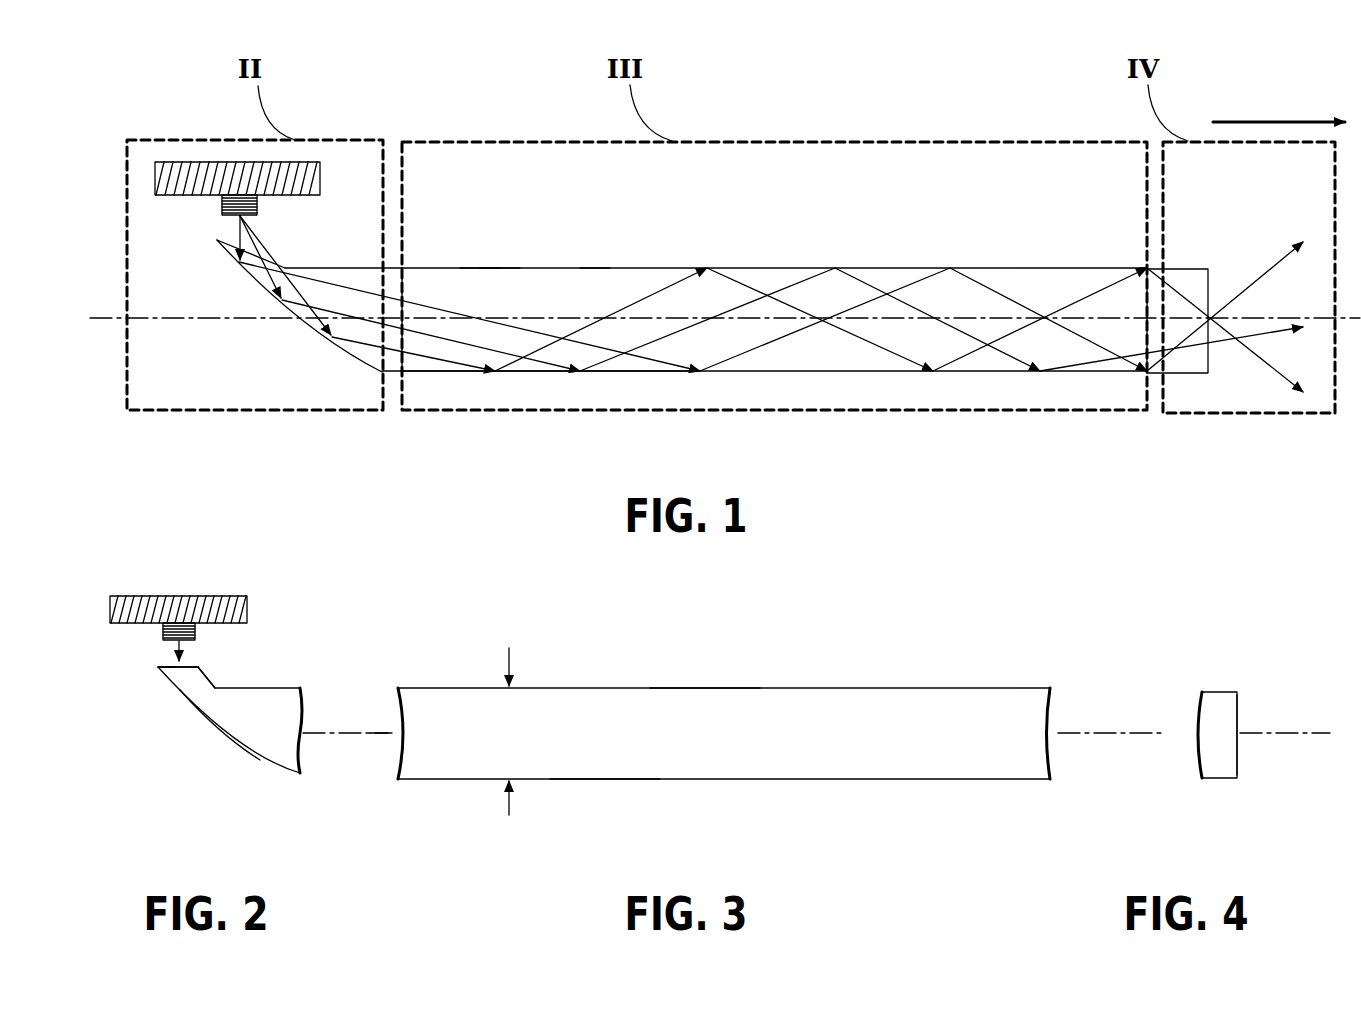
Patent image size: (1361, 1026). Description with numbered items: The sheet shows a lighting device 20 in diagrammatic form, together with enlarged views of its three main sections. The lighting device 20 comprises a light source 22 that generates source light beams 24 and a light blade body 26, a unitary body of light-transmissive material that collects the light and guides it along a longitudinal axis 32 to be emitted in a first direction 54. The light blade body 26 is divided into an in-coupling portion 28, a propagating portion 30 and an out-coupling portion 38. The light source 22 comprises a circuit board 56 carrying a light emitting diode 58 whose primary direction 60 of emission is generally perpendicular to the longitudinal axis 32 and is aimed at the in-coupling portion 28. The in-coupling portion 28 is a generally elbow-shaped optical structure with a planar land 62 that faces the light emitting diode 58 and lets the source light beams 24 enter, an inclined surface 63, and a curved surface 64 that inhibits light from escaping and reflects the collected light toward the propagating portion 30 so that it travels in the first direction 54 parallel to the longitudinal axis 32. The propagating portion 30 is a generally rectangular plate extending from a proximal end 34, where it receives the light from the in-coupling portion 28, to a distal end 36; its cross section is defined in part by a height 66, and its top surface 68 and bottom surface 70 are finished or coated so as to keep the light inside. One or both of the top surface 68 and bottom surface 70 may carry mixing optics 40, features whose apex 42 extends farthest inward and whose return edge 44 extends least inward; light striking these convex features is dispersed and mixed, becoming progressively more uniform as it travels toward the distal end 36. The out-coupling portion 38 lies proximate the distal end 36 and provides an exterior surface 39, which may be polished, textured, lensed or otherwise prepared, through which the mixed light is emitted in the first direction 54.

In FIG. 1, the lighting device 20 is at (735, 93).
In FIG. 1, the light source 22 is at (183, 150).
In FIG. 1, the source light beams 24 is at (238, 223).
In FIG. 1, the light blade body 26 is at (557, 380).
In FIG. 1, the in-coupling portion 28 is at (297, 340).
In FIG. 2, the in-coupling portion 28 is at (233, 740).
In FIG. 1, the propagating portion 30 is at (920, 378).
In FIG. 3, the propagating portion 30 is at (563, 680).
In FIG. 1, the longitudinal axis 32 is at (163, 325).
In FIG. 2, the longitudinal axis 32 is at (358, 733).
In FIG. 3, the longitudinal axis 32 is at (1102, 733).
In FIG. 4, the longitudinal axis 32 is at (1293, 735).
In FIG. 1, the proximal end 34 is at (413, 262).
In FIG. 3, the proximal end 34 is at (414, 680).
In FIG. 1, the distal end 36 is at (1133, 258).
In FIG. 3, the distal end 36 is at (1042, 680).
In FIG. 1, the out-coupling portion 38 is at (1195, 382).
In FIG. 4, the out-coupling portion 38 is at (1218, 682).
In FIG. 4, the exterior surface 39 is at (1237, 705).
In FIG. 1, the mixing optics 40 is at (470, 262).
In FIG. 1, the apex 42 is at (515, 271).
In FIG. 1, the return edge 44 is at (598, 271).
In FIG. 1, the first direction 54 is at (1297, 120).
In FIG. 2, the circuit board 56 is at (220, 595).
In FIG. 2, the light emitting diode 58 is at (193, 637).
In FIG. 2, the primary direction of light emission 60 is at (172, 645).
In FIG. 2, the planar land 62 is at (197, 665).
In FIG. 2, the inclined surface 63 is at (215, 685).
In FIG. 2, the curved surface 64 is at (200, 710).
In FIG. 3, the height 66 is at (508, 657).
In FIG. 3, the top surface 68 is at (703, 688).
In FIG. 3, the bottom surface 70 is at (598, 780).